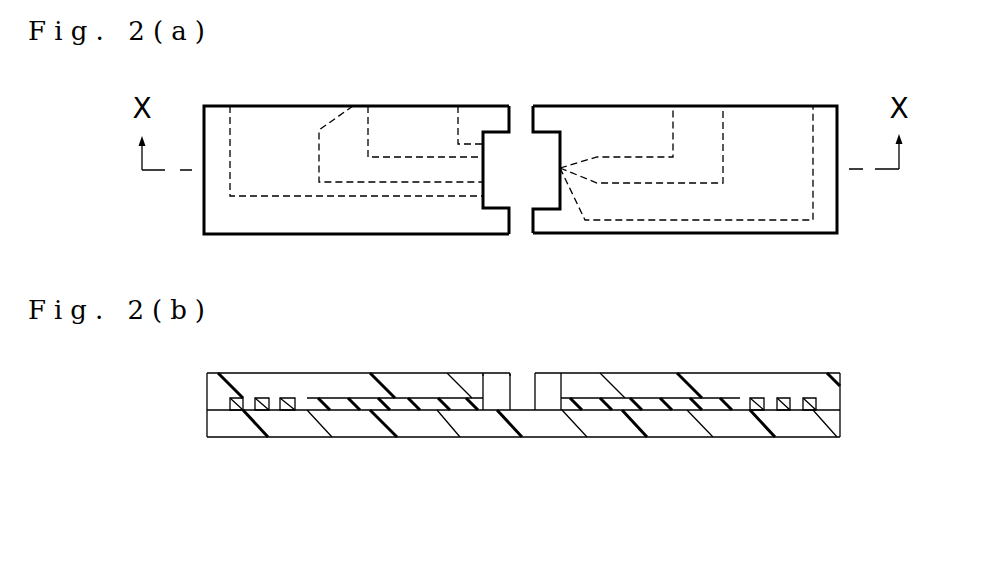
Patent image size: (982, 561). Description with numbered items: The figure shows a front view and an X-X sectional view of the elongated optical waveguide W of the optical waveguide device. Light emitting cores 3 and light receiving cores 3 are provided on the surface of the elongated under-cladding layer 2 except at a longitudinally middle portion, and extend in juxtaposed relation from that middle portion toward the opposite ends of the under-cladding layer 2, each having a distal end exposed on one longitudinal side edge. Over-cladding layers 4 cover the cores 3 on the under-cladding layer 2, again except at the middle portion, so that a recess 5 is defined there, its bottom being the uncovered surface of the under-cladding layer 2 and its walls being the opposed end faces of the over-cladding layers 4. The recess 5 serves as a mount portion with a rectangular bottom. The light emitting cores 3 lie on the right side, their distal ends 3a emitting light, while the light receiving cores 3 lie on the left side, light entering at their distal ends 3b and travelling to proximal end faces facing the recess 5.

In FIG. 2B, the under-cladding layer 2 is at (297, 428).
In FIG. 2A, the light emitting cores and light receiving cores 3 is at (405, 157).
In FIG. 2B, the light emitting cores and light receiving cores 3 is at (333, 398).
In FIG. 2A, the distal ends of the light emitting cores 3a is at (670, 105).
In FIG. 2A, the distal ends of the light receiving cores 3b is at (228, 104).
In FIG. 2A, the over-cladding layer 4 is at (281, 128).
In FIG. 2B, the over-cladding layer 4 is at (397, 380).
In FIG. 2A, the recess 5 is at (536, 157).
In FIG. 2B, the recess 5 is at (526, 381).
In FIG. 2A, the optical waveguide W is at (491, 106).
In FIG. 2B, the optical waveguide W is at (473, 373).